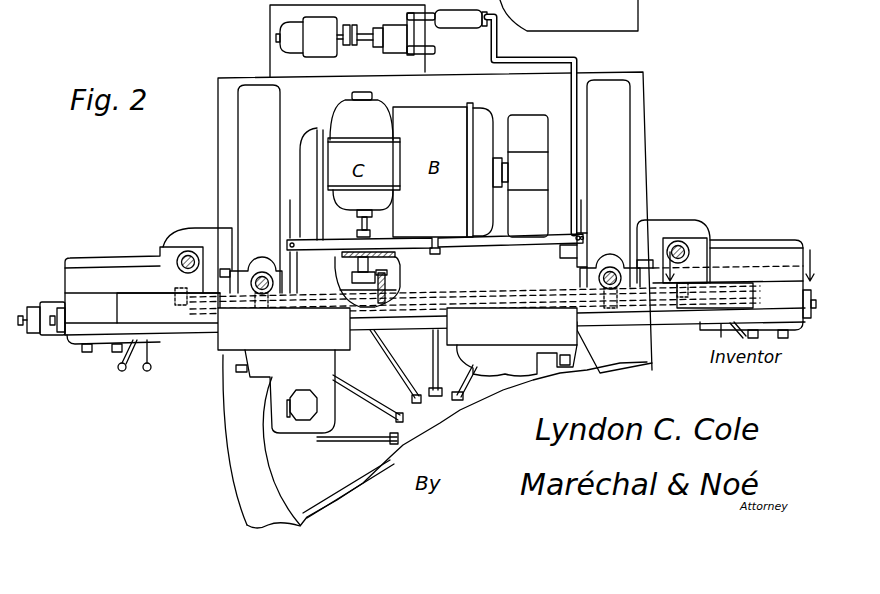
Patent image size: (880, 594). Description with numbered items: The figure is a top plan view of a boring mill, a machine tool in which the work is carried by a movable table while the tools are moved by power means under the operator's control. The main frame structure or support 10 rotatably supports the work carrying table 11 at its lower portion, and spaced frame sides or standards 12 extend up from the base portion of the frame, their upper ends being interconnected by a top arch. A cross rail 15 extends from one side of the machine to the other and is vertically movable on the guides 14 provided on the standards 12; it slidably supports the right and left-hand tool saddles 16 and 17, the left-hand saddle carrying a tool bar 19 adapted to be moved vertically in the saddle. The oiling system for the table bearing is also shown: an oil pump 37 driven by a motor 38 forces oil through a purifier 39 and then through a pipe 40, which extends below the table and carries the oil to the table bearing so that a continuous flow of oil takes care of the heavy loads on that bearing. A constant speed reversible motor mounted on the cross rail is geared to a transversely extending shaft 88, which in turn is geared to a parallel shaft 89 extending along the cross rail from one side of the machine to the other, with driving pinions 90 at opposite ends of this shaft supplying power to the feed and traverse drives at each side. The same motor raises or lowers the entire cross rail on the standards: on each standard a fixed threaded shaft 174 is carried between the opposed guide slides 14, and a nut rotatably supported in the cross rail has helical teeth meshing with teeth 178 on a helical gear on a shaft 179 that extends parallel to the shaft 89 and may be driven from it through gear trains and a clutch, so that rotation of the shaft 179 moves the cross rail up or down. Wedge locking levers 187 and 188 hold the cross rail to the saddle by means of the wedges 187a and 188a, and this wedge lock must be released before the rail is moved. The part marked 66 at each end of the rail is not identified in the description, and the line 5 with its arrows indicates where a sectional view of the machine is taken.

The section line 5- 5 is at (740, 266).
The main frame structure 10 is at (238, 437).
The work carrying table 11 is at (300, 468).
The frame standards 12 is at (250, 146).
The guides 14 is at (600, 283).
The cross rail 15 is at (664, 318).
The right-hand tool saddle 16 is at (512, 354).
The left-hand tool saddle 17 is at (330, 376).
The tool bar 19 is at (298, 405).
The oil pump 37 is at (397, 48).
The motor 38 is at (315, 50).
The purifier 39 is at (471, 27).
The pipe 40 is at (578, 62).
The bearing bracket 66 is at (186, 256).
The transversely extending shaft 88 is at (388, 276).
The parallel shaft 89 is at (350, 292).
The driving pinions 90 is at (175, 300).
The fixed threaded shaft 174 is at (266, 271).
The helical gear teeth 178 is at (255, 303).
The shaft 179 is at (372, 300).
The wedge locking lever 187 is at (413, 223).
The wedge 187a is at (284, 235).
The wedge locking lever 188 is at (467, 236).
The wedge 188a is at (582, 230).